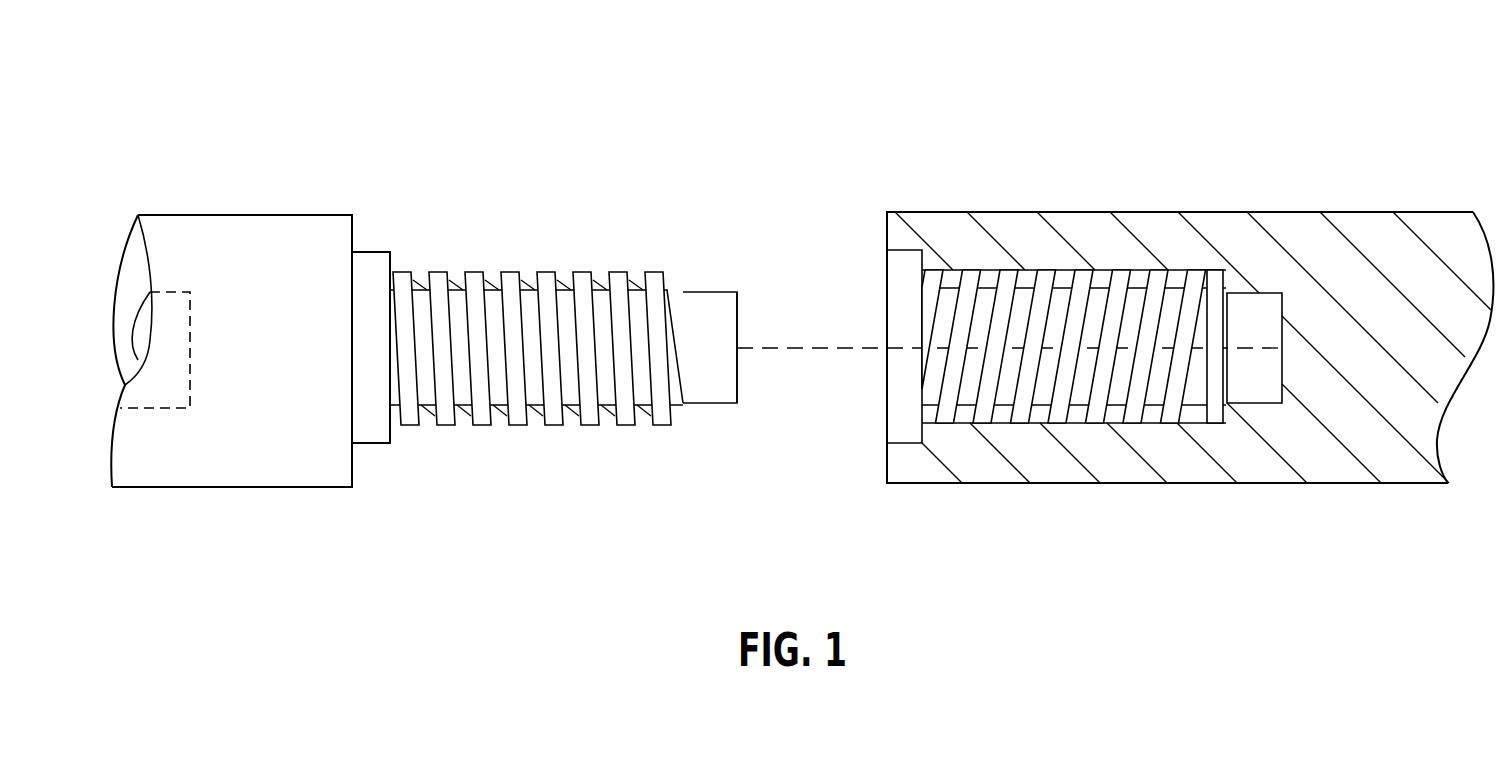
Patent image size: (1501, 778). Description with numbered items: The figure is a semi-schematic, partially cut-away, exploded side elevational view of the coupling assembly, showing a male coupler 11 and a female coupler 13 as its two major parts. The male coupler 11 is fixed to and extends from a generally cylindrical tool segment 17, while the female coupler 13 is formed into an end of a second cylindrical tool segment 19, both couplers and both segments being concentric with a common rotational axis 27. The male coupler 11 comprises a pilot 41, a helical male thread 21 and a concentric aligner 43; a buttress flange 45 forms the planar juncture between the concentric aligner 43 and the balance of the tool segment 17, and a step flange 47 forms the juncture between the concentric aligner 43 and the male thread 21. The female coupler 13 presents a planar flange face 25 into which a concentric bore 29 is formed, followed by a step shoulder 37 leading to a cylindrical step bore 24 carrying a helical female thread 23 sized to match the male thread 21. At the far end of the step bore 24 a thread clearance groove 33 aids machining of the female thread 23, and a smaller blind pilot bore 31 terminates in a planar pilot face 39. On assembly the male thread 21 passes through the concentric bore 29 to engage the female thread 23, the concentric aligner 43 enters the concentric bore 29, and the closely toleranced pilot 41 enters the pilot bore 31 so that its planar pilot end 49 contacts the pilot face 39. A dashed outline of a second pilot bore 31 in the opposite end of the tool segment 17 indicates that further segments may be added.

The male coupler 11 is at (459, 262).
The female coupler 13 is at (972, 177).
The tool segment 17 is at (311, 211).
The tool segment 19 is at (1244, 169).
The helical male thread 21 is at (547, 272).
The helical female thread 23 is at (969, 270).
The cylindrical step bore 24 is at (968, 398).
The flange face 25 is at (886, 222).
The rotational axis 27 is at (803, 345).
The concentric bore 29 is at (902, 250).
The pilot bore 31 is at (157, 402).
The thread clearance groove 33 is at (1228, 278).
The step shoulder 37 is at (920, 421).
The pilot face 39 is at (1285, 299).
The pilot 41 is at (711, 292).
The concentric aligner 43 is at (372, 250).
The buttress flange 45 is at (355, 222).
The step flange 47 is at (390, 441).
The pilot end 49 is at (737, 397).